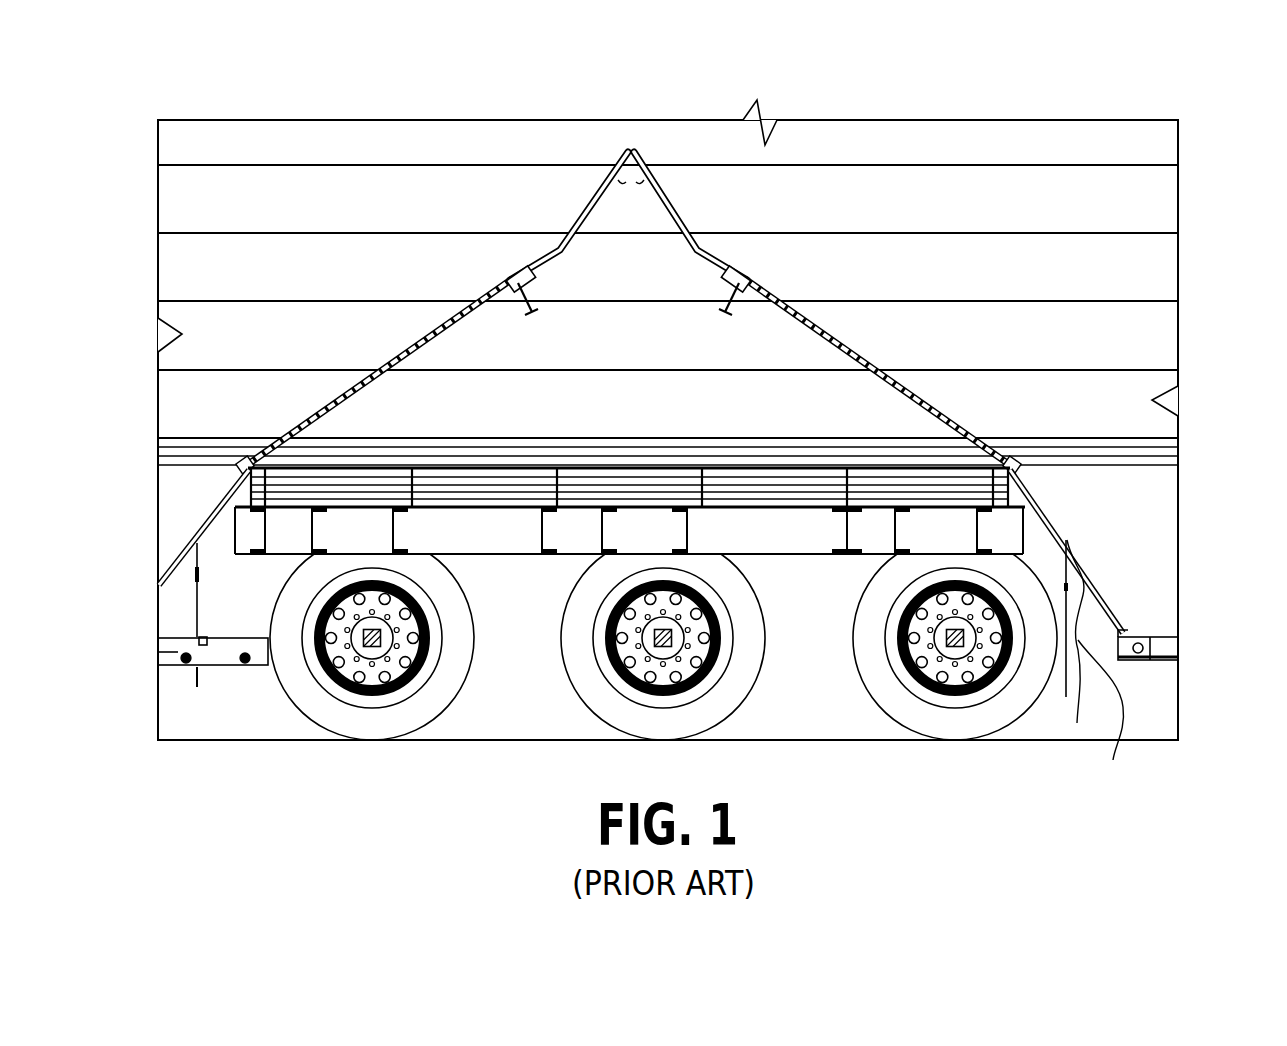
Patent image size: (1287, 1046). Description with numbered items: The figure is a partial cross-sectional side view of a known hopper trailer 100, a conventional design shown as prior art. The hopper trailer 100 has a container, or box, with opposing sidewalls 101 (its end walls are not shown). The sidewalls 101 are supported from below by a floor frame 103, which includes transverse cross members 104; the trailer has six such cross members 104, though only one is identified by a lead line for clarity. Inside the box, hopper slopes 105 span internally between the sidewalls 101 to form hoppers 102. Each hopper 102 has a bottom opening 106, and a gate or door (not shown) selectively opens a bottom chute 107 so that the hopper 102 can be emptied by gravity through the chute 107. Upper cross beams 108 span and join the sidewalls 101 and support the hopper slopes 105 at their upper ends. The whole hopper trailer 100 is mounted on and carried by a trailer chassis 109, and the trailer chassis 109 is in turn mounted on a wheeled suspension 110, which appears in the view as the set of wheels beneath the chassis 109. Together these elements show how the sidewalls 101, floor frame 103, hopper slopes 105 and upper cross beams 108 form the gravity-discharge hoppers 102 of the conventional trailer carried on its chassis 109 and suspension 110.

The hopper trailer 100 is at (323, 114).
The sidewalls 101 is at (1022, 138).
The hoppers 102 is at (368, 204).
The floor frame 103 is at (1018, 493).
The transverse cross members 104 is at (412, 487).
The hopper slopes 105 is at (500, 300).
The bottom opening 106 is at (178, 486).
The bottom chute 107 is at (183, 547).
The upper cross beams 108 is at (518, 310).
The trailer chassis 109 is at (767, 535).
The wheeled suspension 110 is at (1104, 668).